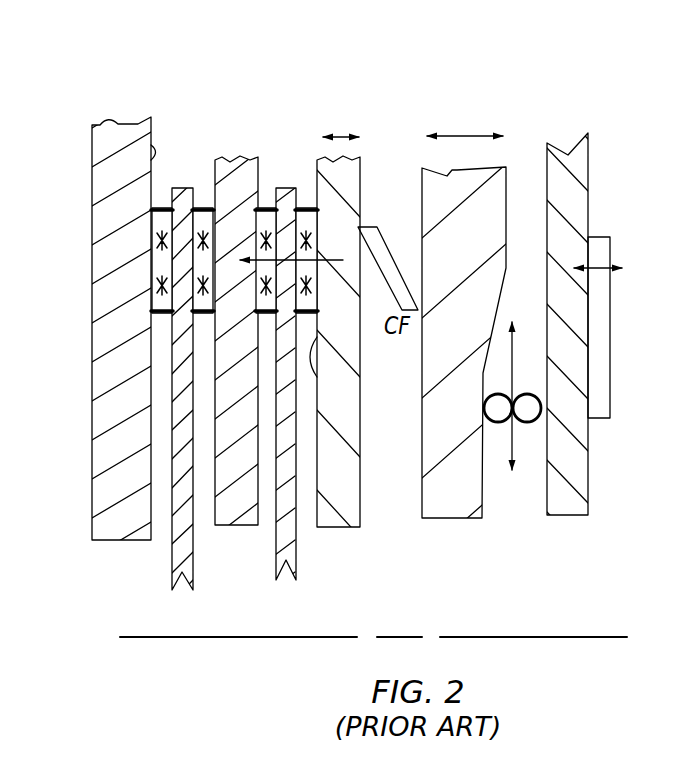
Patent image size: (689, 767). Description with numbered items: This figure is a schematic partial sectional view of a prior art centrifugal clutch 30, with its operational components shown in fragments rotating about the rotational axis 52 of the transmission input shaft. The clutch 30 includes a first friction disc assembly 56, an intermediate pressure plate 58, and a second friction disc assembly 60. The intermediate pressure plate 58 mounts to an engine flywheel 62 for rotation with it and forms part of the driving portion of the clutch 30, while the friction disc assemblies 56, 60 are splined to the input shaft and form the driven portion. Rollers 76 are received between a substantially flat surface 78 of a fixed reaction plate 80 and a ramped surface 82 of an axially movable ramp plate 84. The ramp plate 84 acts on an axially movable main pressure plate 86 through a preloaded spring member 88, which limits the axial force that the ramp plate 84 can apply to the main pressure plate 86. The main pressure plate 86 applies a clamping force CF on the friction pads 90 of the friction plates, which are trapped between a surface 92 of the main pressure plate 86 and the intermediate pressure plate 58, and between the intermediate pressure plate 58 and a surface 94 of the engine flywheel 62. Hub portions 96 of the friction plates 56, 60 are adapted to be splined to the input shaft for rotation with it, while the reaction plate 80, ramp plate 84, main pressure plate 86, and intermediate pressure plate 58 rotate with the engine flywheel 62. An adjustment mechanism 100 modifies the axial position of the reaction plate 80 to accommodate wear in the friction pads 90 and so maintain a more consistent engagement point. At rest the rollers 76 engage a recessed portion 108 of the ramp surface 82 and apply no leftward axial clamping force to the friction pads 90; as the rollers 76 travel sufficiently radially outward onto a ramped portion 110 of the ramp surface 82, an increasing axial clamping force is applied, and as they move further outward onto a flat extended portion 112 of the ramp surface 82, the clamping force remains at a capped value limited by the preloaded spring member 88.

The centrifugal clutch 30 is at (385, 80).
The rotational axis 52 is at (313, 639).
The first friction disc assembly 56 is at (288, 105).
The intermediate pressure plate 58 is at (224, 188).
The second friction disc assembly 60 is at (187, 105).
The engine flywheel 62 is at (122, 292).
The rollers 76 is at (497, 420).
The flat surface 78 is at (547, 190).
The fixed reaction plate 80 is at (567, 197).
The ramped surface 82 is at (486, 484).
The ramp plate 84 is at (465, 108).
The main pressure plate 86 is at (335, 463).
The preloaded spring member 88 is at (378, 247).
The friction pads 90 is at (200, 208).
The surface of main pressure plate 92 is at (317, 377).
The surface of engine flywheel 94 is at (149, 158).
The hub portions 96 is at (193, 532).
The adjustment mechanism 100 is at (595, 338).
The recessed portion 108 is at (482, 387).
The ramped portion 110 is at (493, 333).
The flat extended portion 112 is at (503, 211).